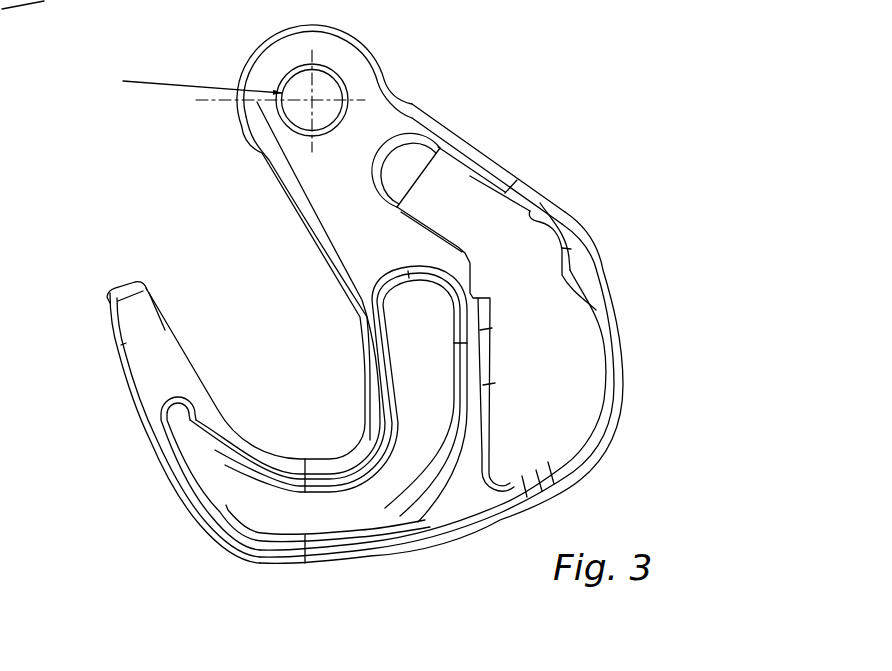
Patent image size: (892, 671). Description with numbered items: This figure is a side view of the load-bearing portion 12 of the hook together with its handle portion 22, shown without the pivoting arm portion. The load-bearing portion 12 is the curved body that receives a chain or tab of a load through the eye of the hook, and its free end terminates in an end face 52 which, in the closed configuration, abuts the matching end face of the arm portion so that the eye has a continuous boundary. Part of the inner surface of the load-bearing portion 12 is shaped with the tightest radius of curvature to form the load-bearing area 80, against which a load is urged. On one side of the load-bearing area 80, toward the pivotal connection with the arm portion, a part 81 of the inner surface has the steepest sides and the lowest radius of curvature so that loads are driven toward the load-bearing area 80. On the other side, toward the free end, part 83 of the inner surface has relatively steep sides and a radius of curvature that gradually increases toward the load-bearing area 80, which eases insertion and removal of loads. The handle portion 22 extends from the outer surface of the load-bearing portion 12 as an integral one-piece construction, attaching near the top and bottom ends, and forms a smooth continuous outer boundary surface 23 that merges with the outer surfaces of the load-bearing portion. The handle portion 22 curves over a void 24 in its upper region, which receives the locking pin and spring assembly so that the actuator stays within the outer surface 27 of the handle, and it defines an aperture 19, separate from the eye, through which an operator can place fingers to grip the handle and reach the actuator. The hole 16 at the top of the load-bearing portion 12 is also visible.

The load-bearing portion 12 is at (147, 388).
The eye hole 16 is at (313, 98).
The aperture 19 is at (578, 370).
The handle portion 22 is at (598, 258).
The outer boundary surface 23 is at (625, 320).
The void 24 is at (443, 185).
The outer surface 27 is at (497, 160).
The end face 52 is at (127, 290).
The load-bearing area 80 is at (318, 458).
The part of the inner surface 81 is at (367, 393).
The part of the inner surface 83 is at (190, 412).